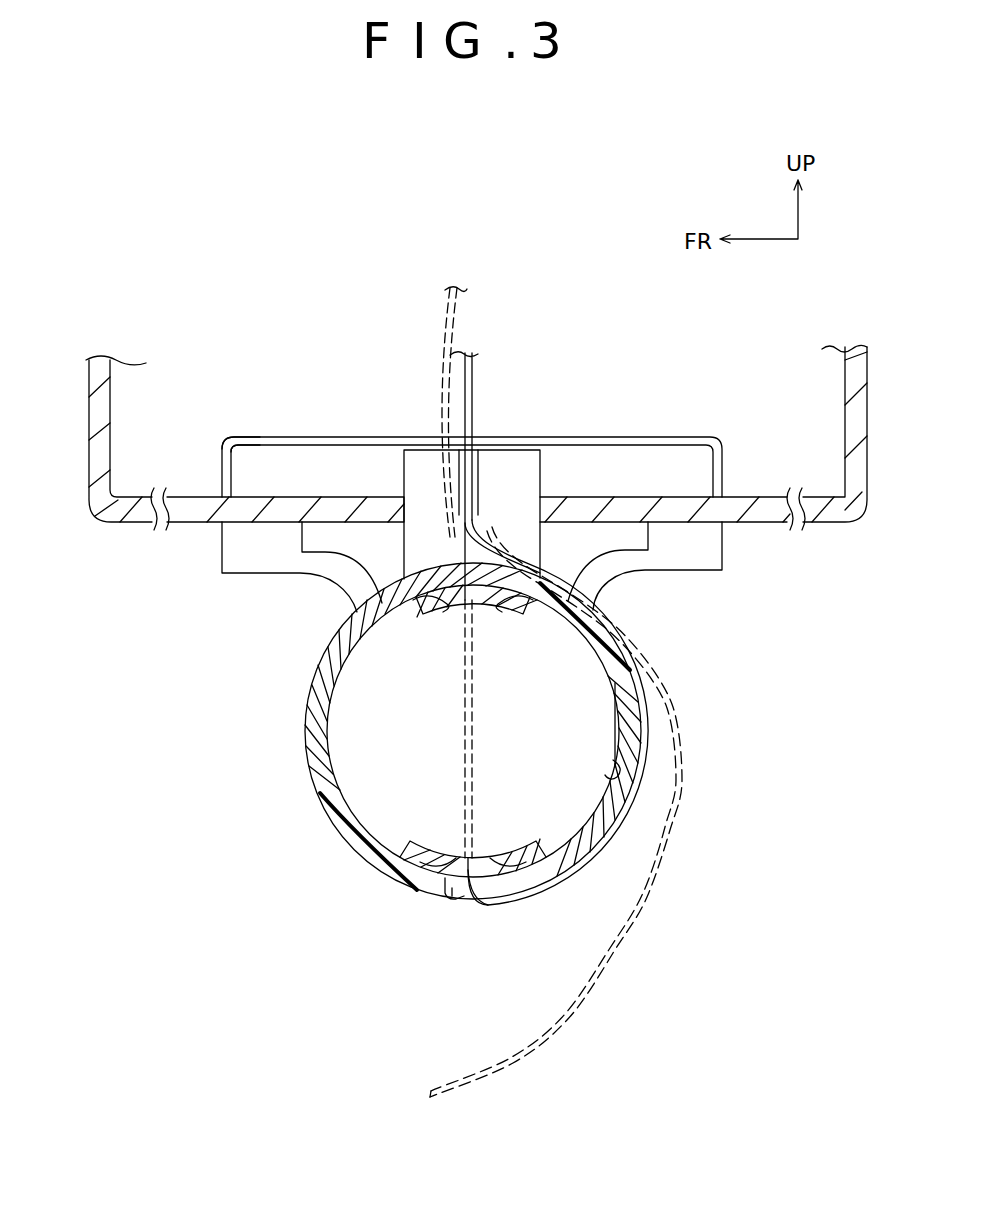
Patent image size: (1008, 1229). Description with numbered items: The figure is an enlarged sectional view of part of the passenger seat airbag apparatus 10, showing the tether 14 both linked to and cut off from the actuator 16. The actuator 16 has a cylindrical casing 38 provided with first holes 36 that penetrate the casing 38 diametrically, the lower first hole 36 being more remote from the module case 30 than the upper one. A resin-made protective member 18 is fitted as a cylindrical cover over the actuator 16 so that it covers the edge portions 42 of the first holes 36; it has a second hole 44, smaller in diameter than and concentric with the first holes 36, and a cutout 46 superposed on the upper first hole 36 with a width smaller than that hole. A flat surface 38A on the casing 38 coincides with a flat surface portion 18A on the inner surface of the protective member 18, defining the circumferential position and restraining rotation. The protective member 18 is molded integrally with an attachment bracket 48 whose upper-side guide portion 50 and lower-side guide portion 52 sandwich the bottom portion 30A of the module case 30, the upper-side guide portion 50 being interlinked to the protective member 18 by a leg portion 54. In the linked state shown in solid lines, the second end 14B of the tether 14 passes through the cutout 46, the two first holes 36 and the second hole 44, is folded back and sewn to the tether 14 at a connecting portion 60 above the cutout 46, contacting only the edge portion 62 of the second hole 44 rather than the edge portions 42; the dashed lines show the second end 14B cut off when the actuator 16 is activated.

The passenger seat airbag apparatus 10 is at (476, 420).
The tether 14 is at (586, 692).
The second end of the tether 14B is at (507, 903).
The actuator 16 is at (427, 731).
The protective member 18 is at (429, 719).
The flat surface portion 18A is at (613, 737).
The module case 30 is at (476, 482).
The bottom portion of the module case 30A is at (598, 497).
The first holes 36 is at (475, 776).
The casing 38 is at (446, 736).
The flat surface 38A is at (613, 777).
The edge portions 42 is at (443, 617).
The second hole 44 is at (460, 903).
The cutout 46 is at (417, 572).
The attachment bracket 48 is at (467, 430).
The upper-side guide portion 50 is at (222, 467).
The lower-side guide portion 52 is at (223, 550).
The leg portion 54 is at (515, 480).
The connecting portion 60 is at (480, 503).
The edge portion of the second hole 62 is at (480, 903).